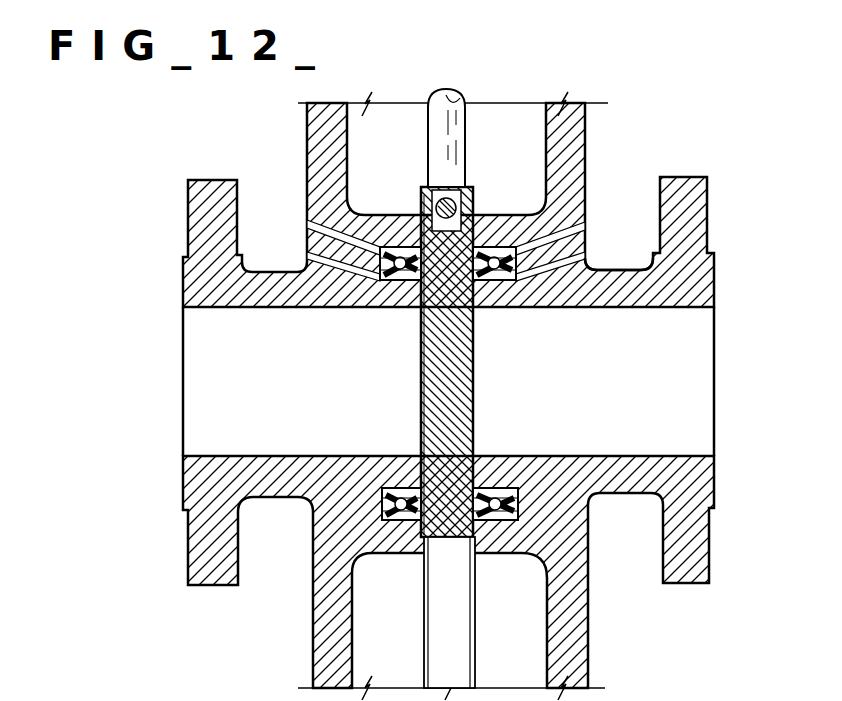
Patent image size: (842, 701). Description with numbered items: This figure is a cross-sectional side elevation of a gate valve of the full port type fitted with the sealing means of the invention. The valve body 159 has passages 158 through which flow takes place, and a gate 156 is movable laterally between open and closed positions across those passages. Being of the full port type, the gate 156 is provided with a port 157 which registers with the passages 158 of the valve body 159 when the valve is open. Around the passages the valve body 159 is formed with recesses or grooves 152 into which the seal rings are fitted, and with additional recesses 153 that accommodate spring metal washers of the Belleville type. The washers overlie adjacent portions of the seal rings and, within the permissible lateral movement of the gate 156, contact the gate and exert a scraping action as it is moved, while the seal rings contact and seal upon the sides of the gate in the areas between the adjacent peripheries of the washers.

The recesses or grooves 152 is at (448, 578).
The additional recesses 153 is at (431, 688).
The gate 156 is at (470, 395).
The port 157 is at (462, 642).
The passages 158 is at (193, 388).
The valve body 159 is at (605, 270).